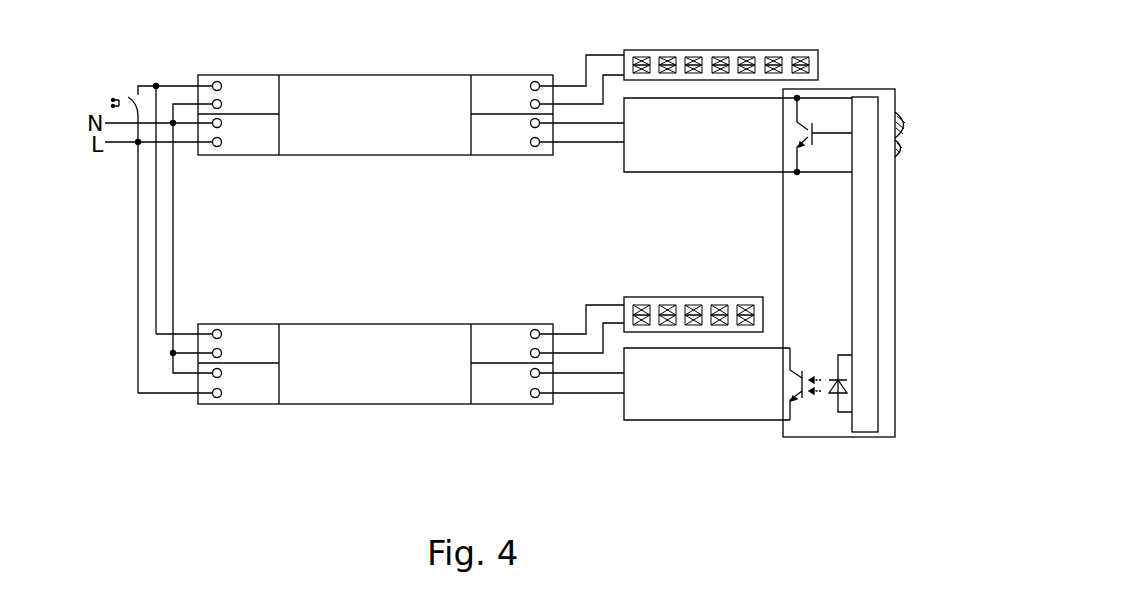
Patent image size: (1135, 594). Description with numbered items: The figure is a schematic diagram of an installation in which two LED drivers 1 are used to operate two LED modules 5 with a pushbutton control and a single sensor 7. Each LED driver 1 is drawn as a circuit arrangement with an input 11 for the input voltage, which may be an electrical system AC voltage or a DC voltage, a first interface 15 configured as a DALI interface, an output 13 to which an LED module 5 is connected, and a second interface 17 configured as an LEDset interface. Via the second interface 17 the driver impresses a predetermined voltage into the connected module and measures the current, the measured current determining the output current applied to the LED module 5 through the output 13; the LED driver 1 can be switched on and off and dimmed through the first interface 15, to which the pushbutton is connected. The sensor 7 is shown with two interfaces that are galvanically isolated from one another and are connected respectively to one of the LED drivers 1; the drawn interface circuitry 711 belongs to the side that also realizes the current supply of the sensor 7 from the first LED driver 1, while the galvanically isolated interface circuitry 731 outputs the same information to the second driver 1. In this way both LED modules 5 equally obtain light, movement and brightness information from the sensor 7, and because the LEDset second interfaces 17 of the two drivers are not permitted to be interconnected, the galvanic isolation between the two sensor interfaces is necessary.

The LED driver 1 is at (386, 127).
The LED module 5 is at (820, 62).
The sensor 7 is at (865, 427).
The input 11 is at (264, 145).
The output 13 is at (516, 106).
The first interface 15 is at (264, 106).
The second interface 17 is at (516, 145).
The switching circuit 711 is at (806, 112).
The optocoupler circuit 731 is at (722, 412).